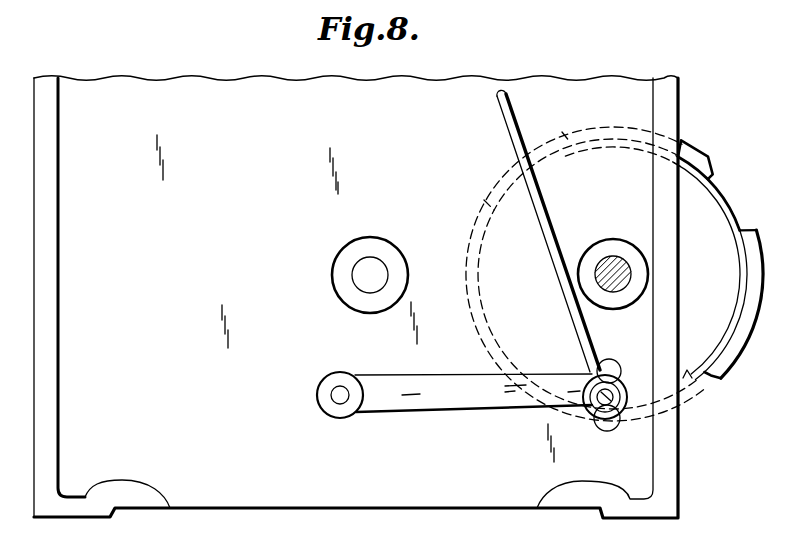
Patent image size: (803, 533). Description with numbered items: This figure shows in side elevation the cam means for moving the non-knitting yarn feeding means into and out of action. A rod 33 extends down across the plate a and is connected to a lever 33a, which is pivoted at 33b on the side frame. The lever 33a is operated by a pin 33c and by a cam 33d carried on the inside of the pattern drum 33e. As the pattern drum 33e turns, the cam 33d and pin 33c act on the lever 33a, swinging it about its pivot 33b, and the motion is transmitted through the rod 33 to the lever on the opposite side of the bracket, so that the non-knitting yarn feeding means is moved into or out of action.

The plate a is at (249, 92).
The rod 33 is at (517, 142).
The lever 33a is at (443, 382).
The pivot 33b is at (340, 390).
The pin 33c is at (616, 410).
The cam 33d is at (687, 371).
The pattern drum 33e is at (710, 202).